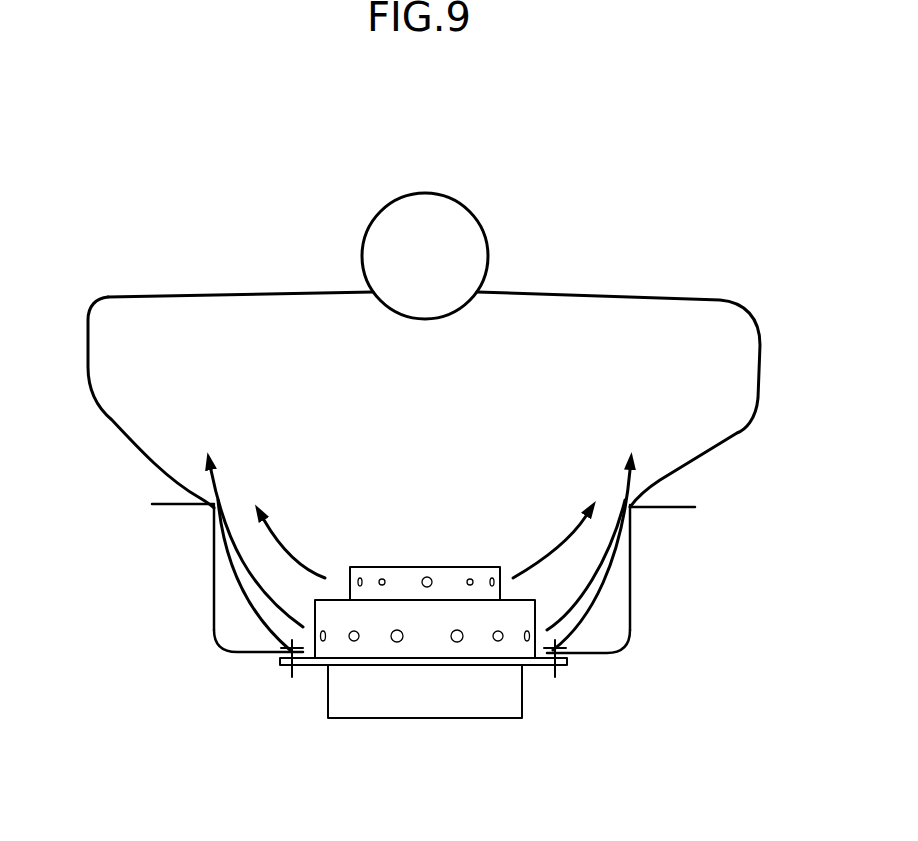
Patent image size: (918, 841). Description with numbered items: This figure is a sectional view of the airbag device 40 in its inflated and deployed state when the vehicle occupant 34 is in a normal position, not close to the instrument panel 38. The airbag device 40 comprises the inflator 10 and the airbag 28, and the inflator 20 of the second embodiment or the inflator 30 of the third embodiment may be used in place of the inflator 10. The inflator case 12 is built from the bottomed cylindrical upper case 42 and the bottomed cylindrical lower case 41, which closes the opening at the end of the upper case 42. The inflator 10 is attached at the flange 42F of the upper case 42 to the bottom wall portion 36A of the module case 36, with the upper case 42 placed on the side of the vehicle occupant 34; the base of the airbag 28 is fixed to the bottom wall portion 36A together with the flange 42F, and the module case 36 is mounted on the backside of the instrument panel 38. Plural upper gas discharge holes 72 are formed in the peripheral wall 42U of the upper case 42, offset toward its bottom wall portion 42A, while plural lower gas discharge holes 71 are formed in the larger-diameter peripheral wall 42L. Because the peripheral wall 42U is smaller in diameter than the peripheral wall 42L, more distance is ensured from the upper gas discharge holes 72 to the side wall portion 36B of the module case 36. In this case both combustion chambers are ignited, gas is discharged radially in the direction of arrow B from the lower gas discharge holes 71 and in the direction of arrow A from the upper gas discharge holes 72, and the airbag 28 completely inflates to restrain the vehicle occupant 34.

The airbag device 40 is at (188, 188).
The airbag 28 is at (612, 286).
The vehicle occupant 34 is at (431, 192).
The instrument panel 38 is at (155, 494).
The module case 36 is at (640, 618).
The side wall portion 36B is at (631, 583).
The bottom wall portion 36A is at (610, 655).
The upper case 42 is at (404, 560).
The peripheral wall 42U is at (490, 567).
The peripheral wall 42L is at (535, 603).
The bottom wall portion 42A is at (370, 567).
The flange 42F is at (542, 667).
The upper gas discharge holes 72 is at (470, 579).
The lower gas discharge holes 71 is at (400, 640).
The inflator case 12 is at (284, 708).
The inflator 10 is at (306, 752).
The inflator 20 is at (425, 737).
The inflator 30 is at (425, 737).
The lower case 41 is at (419, 724).